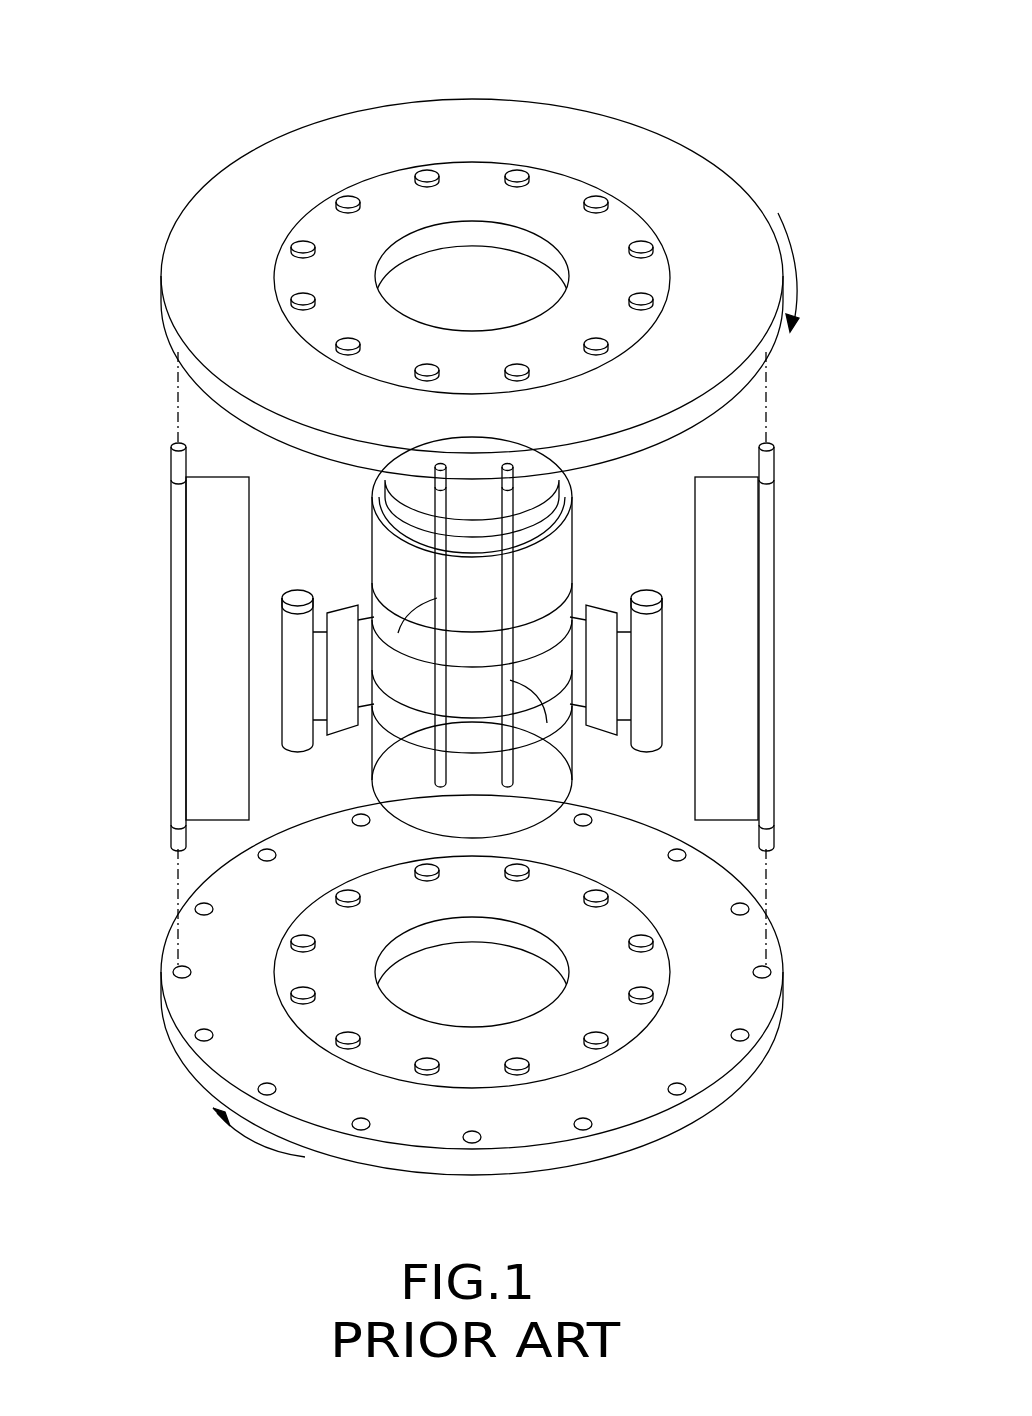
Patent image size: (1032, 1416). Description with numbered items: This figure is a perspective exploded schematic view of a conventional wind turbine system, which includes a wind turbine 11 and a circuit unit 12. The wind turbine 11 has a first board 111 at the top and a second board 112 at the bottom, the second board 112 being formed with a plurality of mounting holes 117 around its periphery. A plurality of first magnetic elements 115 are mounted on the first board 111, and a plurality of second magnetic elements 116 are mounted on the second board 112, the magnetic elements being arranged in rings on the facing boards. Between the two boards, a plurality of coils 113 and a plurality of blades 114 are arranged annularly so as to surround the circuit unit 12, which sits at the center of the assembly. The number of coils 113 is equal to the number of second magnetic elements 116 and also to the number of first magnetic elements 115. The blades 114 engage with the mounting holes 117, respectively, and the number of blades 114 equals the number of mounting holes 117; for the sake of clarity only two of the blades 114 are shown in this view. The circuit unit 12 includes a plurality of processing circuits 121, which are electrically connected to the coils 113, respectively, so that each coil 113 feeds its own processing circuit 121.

The wind turbine 11 is at (535, 86).
The first board 111 is at (753, 200).
The second board 112 is at (693, 1123).
The coils 113 is at (283, 600).
The blades 114 is at (185, 650).
The first magnetic elements 115 is at (598, 196).
The second magnetic elements 116 is at (512, 1075).
The mounting holes 117 is at (172, 970).
The circuit unit 12 is at (574, 522).
The processing circuits 121 is at (342, 606).